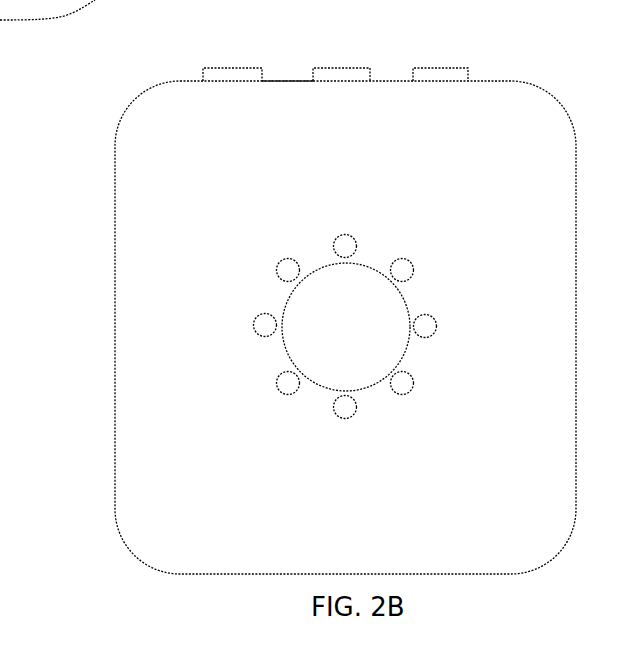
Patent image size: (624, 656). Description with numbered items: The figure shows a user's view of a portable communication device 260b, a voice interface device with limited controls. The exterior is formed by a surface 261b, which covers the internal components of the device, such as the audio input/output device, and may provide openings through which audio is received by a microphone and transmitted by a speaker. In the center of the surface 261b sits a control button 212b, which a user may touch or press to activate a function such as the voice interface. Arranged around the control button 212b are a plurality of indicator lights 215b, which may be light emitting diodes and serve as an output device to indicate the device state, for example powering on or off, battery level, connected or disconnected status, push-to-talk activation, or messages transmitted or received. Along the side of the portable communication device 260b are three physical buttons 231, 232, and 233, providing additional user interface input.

The physical button 231 is at (232, 68).
The physical button 232 is at (341, 68).
The physical button 233 is at (440, 68).
The portable communication device 260b is at (366, 121).
The surface 261b is at (167, 166).
The control button 212b is at (362, 334).
The indicator lights 215b is at (248, 325).